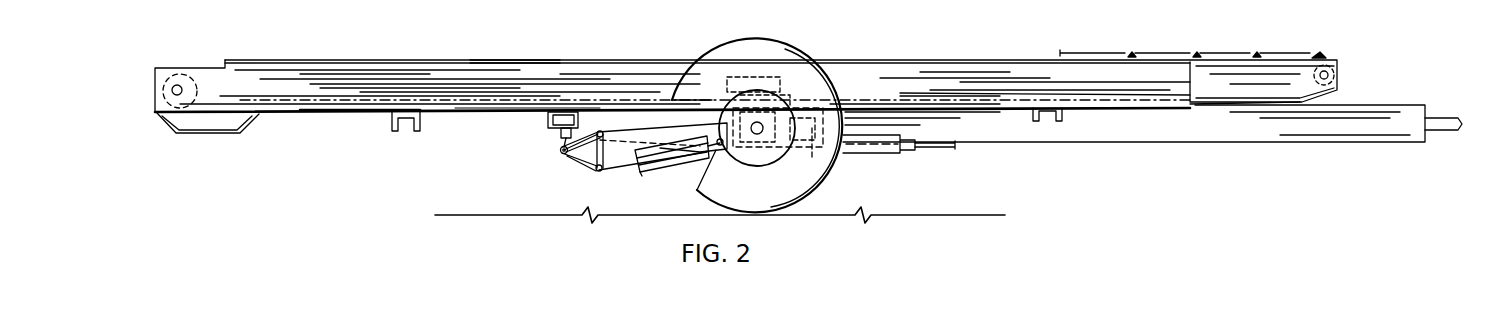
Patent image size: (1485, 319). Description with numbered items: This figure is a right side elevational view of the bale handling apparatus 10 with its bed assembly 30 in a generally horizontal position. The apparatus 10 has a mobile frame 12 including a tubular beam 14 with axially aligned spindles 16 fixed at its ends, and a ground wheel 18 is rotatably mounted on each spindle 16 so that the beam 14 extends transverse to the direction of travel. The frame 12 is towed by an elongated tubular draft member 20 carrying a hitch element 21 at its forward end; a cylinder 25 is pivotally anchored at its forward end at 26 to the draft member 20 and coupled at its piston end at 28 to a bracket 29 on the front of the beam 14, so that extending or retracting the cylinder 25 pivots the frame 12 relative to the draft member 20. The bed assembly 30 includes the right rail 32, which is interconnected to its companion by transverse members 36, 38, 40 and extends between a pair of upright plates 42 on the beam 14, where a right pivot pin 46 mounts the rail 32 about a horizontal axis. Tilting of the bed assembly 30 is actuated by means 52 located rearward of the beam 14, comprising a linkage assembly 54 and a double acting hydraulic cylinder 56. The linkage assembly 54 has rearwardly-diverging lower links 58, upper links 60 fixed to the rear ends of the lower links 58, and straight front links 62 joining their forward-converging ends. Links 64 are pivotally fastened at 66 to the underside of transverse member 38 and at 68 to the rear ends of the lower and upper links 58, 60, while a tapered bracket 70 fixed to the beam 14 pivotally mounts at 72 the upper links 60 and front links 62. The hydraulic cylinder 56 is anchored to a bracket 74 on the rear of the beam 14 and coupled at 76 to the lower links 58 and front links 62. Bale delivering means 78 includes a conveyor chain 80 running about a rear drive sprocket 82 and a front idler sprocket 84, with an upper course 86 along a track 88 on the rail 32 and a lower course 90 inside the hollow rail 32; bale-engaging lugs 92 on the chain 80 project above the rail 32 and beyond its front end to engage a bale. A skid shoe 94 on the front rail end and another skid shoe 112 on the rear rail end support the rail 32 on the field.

The apparatus 10 is at (748, 30).
The mobile frame 12 is at (852, 36).
The beam 14 is at (797, 131).
The spindles 16 is at (760, 166).
The ground wheel 18 is at (824, 174).
The draft member 20 is at (1386, 106).
The hitch element 21 is at (1441, 118).
The cylinder 25 is at (872, 155).
The forward cylinder end pivot 26 is at (936, 152).
The piston end pivot 28 is at (800, 150).
The bracket 29 is at (812, 168).
The bed assembly 30 is at (484, 134).
The right rail 32 is at (322, 114).
The transverse member 36 is at (1070, 114).
The transverse member 38 is at (548, 122).
The transverse member 40 is at (410, 121).
The upright plates 42 is at (780, 93).
The right pivot pin 46 is at (776, 82).
The tilting means 52 is at (556, 188).
The linkage assembly 54 is at (637, 183).
The hydraulic cylinder 56 is at (676, 160).
The lower links 58 is at (596, 163).
The upper links 60 is at (578, 133).
The straight front links 62 is at (606, 153).
The links 64 is at (560, 151).
The upper pivot fastening 66 is at (565, 128).
The lower pivot fastening 68 is at (563, 157).
The tapered bracket 70 is at (707, 132).
The pivot mounting 72 is at (610, 136).
The bracket 74 is at (755, 134).
The rear piston end pivot 76 is at (599, 175).
The bale delivering means 78 is at (1302, 53).
The conveyor chain 80 is at (1247, 53).
The rear drive sprocket 82 is at (198, 95).
The front idler sprocket 84 is at (1338, 74).
The upper course 86 is at (1120, 53).
The track 88 is at (1186, 53).
The lower course 90 is at (512, 84).
The bale-engaging lug 92 is at (1326, 56).
The skid shoe 94 is at (1272, 98).
The skid shoe 112 is at (176, 138).